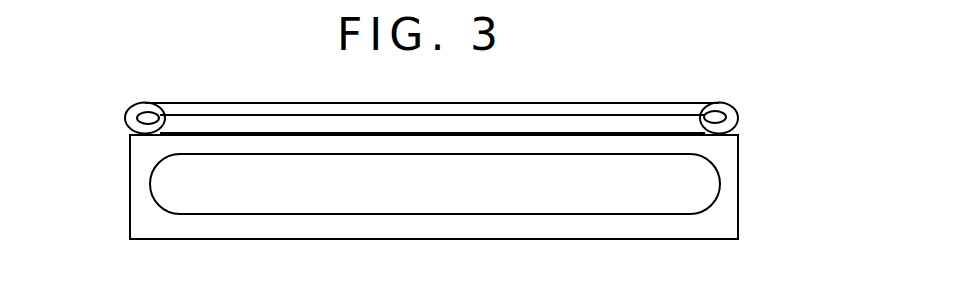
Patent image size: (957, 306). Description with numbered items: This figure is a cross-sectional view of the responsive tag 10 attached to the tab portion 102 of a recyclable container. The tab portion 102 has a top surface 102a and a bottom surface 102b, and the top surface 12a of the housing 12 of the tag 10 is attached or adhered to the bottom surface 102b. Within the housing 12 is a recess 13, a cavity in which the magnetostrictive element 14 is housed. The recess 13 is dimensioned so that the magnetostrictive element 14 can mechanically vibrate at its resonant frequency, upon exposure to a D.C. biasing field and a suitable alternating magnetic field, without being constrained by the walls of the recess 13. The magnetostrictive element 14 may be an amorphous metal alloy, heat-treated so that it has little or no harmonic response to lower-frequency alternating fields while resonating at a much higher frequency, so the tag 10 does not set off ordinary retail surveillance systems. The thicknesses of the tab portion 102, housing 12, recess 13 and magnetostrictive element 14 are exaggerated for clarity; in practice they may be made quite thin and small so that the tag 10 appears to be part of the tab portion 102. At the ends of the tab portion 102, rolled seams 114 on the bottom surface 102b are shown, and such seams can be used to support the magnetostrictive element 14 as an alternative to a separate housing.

The responsive tag 10 is at (449, 169).
The housing 12 is at (740, 182).
The top surface of the housing 12a is at (230, 135).
The recess 13 is at (160, 225).
The magnetostrictive element 14 is at (175, 188).
The tab portion 102 is at (462, 90).
The top surface of the tab portion 102a is at (635, 100).
The bottom surface of the tab portion 102b is at (735, 118).
The rolled seams 114 is at (132, 122).